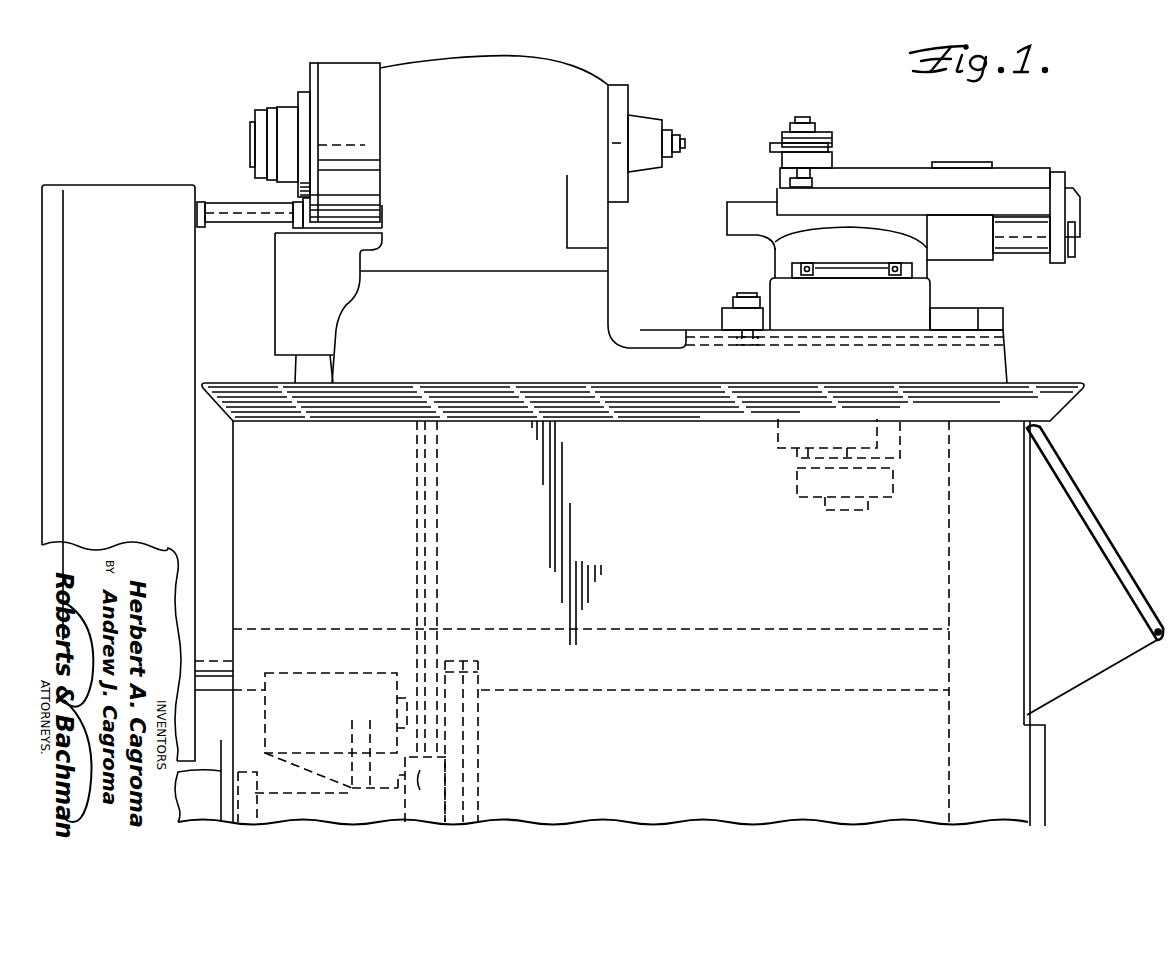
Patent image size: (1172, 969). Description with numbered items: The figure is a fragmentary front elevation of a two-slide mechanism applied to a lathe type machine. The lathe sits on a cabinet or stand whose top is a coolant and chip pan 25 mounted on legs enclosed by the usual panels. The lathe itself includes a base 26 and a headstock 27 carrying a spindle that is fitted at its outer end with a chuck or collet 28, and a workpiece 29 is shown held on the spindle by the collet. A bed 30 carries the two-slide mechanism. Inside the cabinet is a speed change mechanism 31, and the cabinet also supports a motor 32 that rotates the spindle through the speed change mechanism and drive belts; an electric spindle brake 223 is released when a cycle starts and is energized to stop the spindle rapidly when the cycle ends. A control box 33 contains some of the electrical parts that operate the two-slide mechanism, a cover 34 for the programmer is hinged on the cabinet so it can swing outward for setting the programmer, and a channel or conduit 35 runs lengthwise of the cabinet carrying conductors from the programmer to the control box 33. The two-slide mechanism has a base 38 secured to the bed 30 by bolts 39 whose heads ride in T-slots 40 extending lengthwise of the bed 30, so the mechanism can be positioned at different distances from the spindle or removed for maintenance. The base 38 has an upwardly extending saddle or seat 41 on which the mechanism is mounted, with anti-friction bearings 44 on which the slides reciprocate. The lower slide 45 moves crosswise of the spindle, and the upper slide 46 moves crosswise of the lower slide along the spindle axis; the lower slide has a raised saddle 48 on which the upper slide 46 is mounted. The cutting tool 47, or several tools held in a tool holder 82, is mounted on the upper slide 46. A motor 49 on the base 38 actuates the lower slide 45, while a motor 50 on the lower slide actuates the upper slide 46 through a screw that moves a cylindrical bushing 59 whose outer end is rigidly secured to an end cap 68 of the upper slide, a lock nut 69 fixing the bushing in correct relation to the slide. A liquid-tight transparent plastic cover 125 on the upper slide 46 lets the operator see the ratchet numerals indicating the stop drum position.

The coolant and chip pan 25 is at (494, 388).
The base 26 is at (640, 358).
The headstock 27 is at (414, 70).
The chuck or collet 28 is at (672, 122).
The workpiece 29 is at (686, 144).
The bed 30 is at (985, 353).
The speed change mechanism 31 is at (485, 717).
The motor 32 is at (198, 781).
The control box 33 is at (118, 198).
The cover for the programmer 34 is at (1104, 522).
The channel or conduit 35 is at (214, 638).
The base 38 is at (968, 312).
The bolts 39 is at (748, 300).
The T-slots 40 is at (782, 344).
The saddle or seat 41 is at (852, 280).
The anti-friction bearings 44 is at (810, 274).
The lower slide 45 is at (916, 254).
The upper slide 46 is at (908, 196).
The cutting tool 47 is at (774, 148).
The saddle 48 is at (858, 230).
The motor 49 is at (806, 498).
The motor 50 is at (778, 425).
The cylindrical bushing 59 is at (1038, 255).
The end cap 68 is at (1062, 207).
The lock nut 69 is at (1076, 250).
The tool holder 82 is at (838, 135).
The transparent plastic cover 125 is at (984, 163).
The electric spindle brake 223 is at (350, 118).